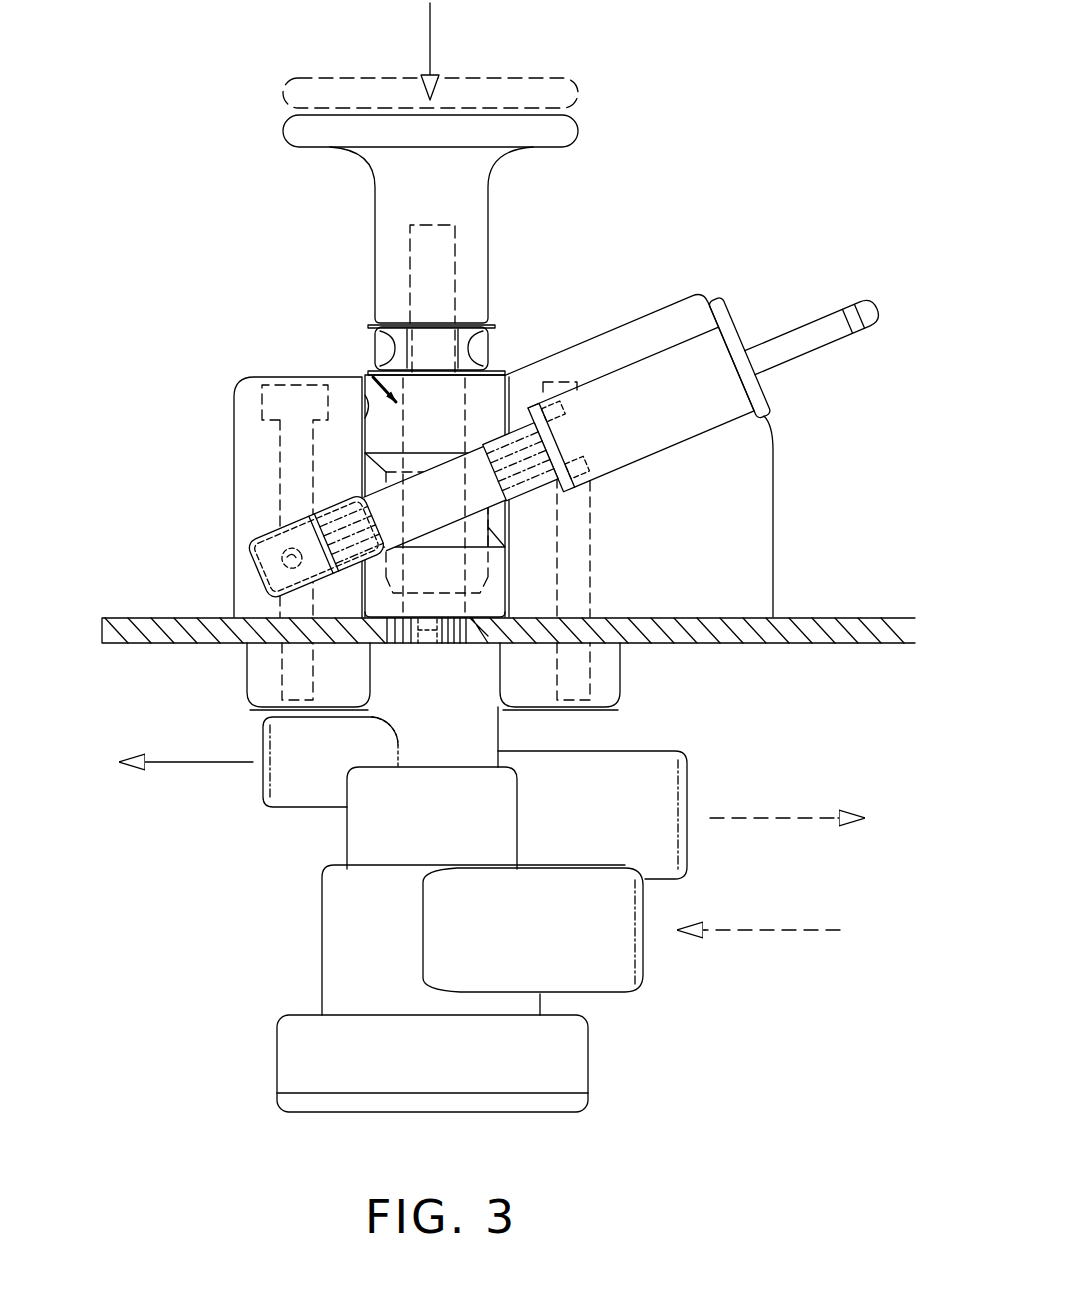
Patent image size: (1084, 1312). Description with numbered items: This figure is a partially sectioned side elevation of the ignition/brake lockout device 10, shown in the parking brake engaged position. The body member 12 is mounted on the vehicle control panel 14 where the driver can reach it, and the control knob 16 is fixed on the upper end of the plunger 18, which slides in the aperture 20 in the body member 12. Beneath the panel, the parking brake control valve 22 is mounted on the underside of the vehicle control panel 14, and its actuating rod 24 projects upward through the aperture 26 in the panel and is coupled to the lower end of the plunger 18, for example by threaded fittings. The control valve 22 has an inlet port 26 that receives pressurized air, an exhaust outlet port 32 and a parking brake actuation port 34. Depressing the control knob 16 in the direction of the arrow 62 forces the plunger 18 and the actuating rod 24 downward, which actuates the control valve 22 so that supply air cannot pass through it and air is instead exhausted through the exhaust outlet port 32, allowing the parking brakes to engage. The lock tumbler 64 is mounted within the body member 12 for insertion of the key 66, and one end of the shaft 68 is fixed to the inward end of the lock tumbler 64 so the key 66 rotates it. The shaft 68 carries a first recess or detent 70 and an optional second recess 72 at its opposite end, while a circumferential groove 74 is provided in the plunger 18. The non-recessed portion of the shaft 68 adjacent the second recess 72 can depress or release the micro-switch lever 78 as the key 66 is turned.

The ignition/brake lockout device 10 is at (688, 208).
The body member 12 is at (780, 540).
The vehicle control panel 14 is at (830, 615).
The control knob 16 is at (280, 141).
The plunger 18 is at (504, 375).
The aperture 20 is at (367, 412).
The parking brake control valve 22 is at (318, 930).
The actuating rod 24 is at (430, 630).
The aperture / inlet port 26 is at (482, 632).
The exhaust outlet port 32 is at (260, 776).
The parking brake actuation port 34 is at (695, 790).
The arrow 62 is at (429, 50).
The lock tumbler 64 is at (638, 394).
The key 66 is at (813, 336).
The shaft 68 is at (351, 534).
The first recess or detent 70 is at (461, 488).
The second recess or detent 72 is at (316, 547).
The circumferential groove 74 is at (520, 462).
The lever 78 is at (292, 558).